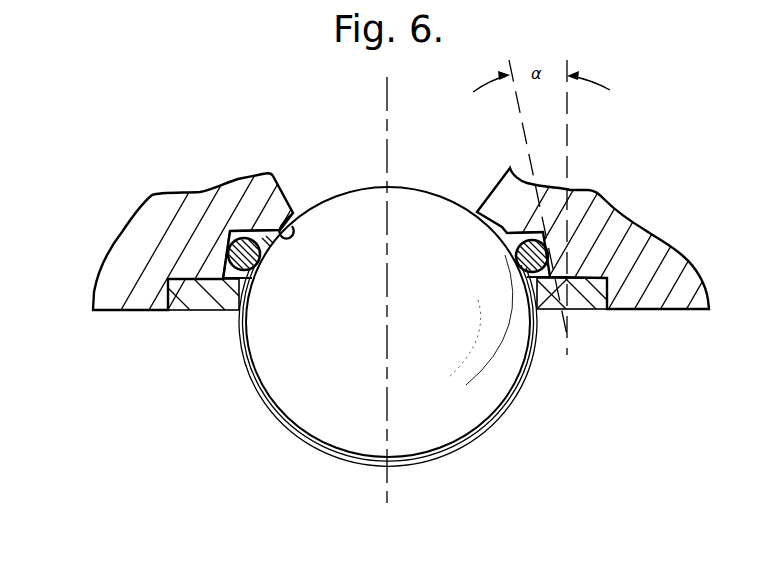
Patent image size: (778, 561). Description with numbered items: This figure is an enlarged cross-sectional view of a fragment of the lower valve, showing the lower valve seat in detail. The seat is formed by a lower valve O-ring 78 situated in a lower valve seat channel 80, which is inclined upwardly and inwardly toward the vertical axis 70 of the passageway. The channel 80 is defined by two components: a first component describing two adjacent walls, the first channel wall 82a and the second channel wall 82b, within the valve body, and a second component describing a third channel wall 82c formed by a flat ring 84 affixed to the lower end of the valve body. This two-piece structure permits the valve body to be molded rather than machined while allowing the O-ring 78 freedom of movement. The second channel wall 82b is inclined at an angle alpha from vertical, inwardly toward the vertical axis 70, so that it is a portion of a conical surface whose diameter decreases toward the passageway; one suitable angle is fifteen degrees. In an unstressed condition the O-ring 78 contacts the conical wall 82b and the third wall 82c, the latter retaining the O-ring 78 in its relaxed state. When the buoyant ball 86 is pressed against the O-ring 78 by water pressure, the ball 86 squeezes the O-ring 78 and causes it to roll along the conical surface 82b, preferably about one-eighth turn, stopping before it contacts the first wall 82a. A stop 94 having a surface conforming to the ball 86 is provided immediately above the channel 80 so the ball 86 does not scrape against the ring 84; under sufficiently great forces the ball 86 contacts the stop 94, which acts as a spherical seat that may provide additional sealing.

The vertical axis 70 is at (385, 123).
The lower valve O-ring 78 is at (500, 256).
The lower valve seat channel 80 is at (255, 222).
The first channel wall 82a is at (236, 228).
The second channel wall 82b is at (230, 232).
The third channel wall 82c is at (223, 277).
The flat ring 84 is at (200, 311).
The ball 86 is at (406, 287).
The stop 94 is at (282, 228).